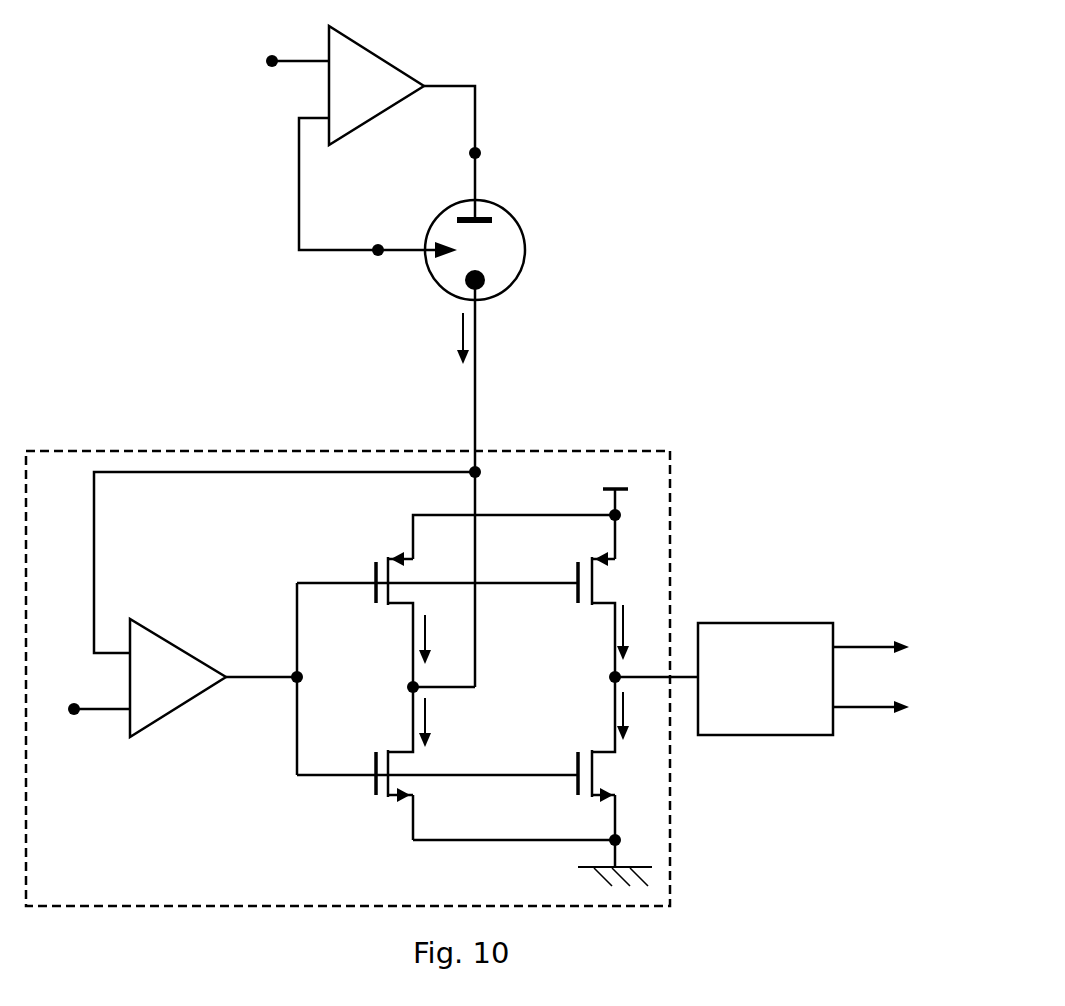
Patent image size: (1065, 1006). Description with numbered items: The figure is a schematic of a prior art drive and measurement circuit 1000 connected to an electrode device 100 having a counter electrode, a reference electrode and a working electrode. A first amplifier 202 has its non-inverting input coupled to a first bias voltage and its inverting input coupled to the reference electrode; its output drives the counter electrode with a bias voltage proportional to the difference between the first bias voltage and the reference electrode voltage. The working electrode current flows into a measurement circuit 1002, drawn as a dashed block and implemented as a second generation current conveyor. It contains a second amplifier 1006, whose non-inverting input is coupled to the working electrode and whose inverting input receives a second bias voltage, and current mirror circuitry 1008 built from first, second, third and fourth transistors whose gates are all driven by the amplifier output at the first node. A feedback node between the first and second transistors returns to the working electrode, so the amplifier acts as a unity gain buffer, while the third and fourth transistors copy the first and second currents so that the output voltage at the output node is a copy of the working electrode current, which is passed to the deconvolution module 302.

The first amplifier 202 is at (400, 66).
The electrochemical sensor 100 is at (515, 215).
The drive and measurement circuit 1000 is at (709, 202).
The measurement circuit 1002 is at (97, 450).
The second amplifier 1006 is at (170, 642).
The current mirror circuitry 1008 is at (308, 551).
The deconvolution module 302 is at (784, 706).